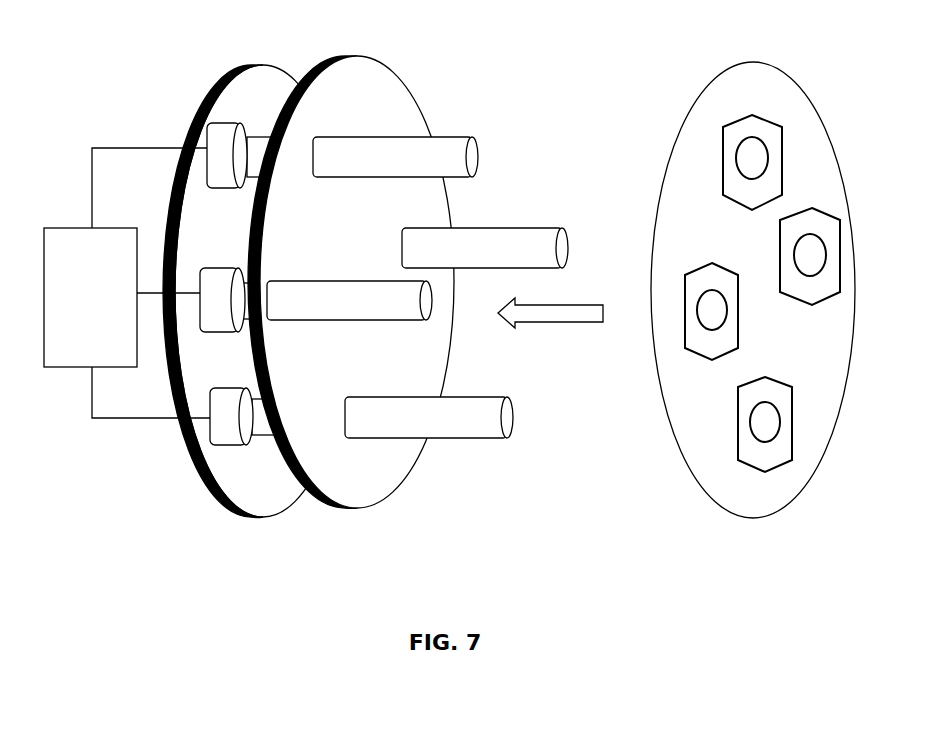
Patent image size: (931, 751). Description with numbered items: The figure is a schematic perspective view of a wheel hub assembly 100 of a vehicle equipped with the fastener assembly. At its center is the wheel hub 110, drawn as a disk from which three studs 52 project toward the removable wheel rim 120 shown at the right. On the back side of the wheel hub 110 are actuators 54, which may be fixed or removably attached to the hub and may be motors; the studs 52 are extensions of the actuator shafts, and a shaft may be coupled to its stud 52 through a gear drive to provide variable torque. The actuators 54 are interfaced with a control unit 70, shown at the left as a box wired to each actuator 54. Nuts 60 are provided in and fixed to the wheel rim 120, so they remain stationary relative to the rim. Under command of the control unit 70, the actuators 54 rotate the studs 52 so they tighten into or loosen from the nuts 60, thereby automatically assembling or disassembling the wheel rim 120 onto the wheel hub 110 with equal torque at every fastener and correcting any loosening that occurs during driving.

The stud 52 is at (500, 248).
The actuator 54 is at (227, 438).
The nut 60 is at (753, 115).
The control unit 70 is at (95, 289).
The wheel hub assembly 100 is at (603, 95).
The wheel hub 110 is at (372, 89).
The wheel rim 120 is at (683, 175).